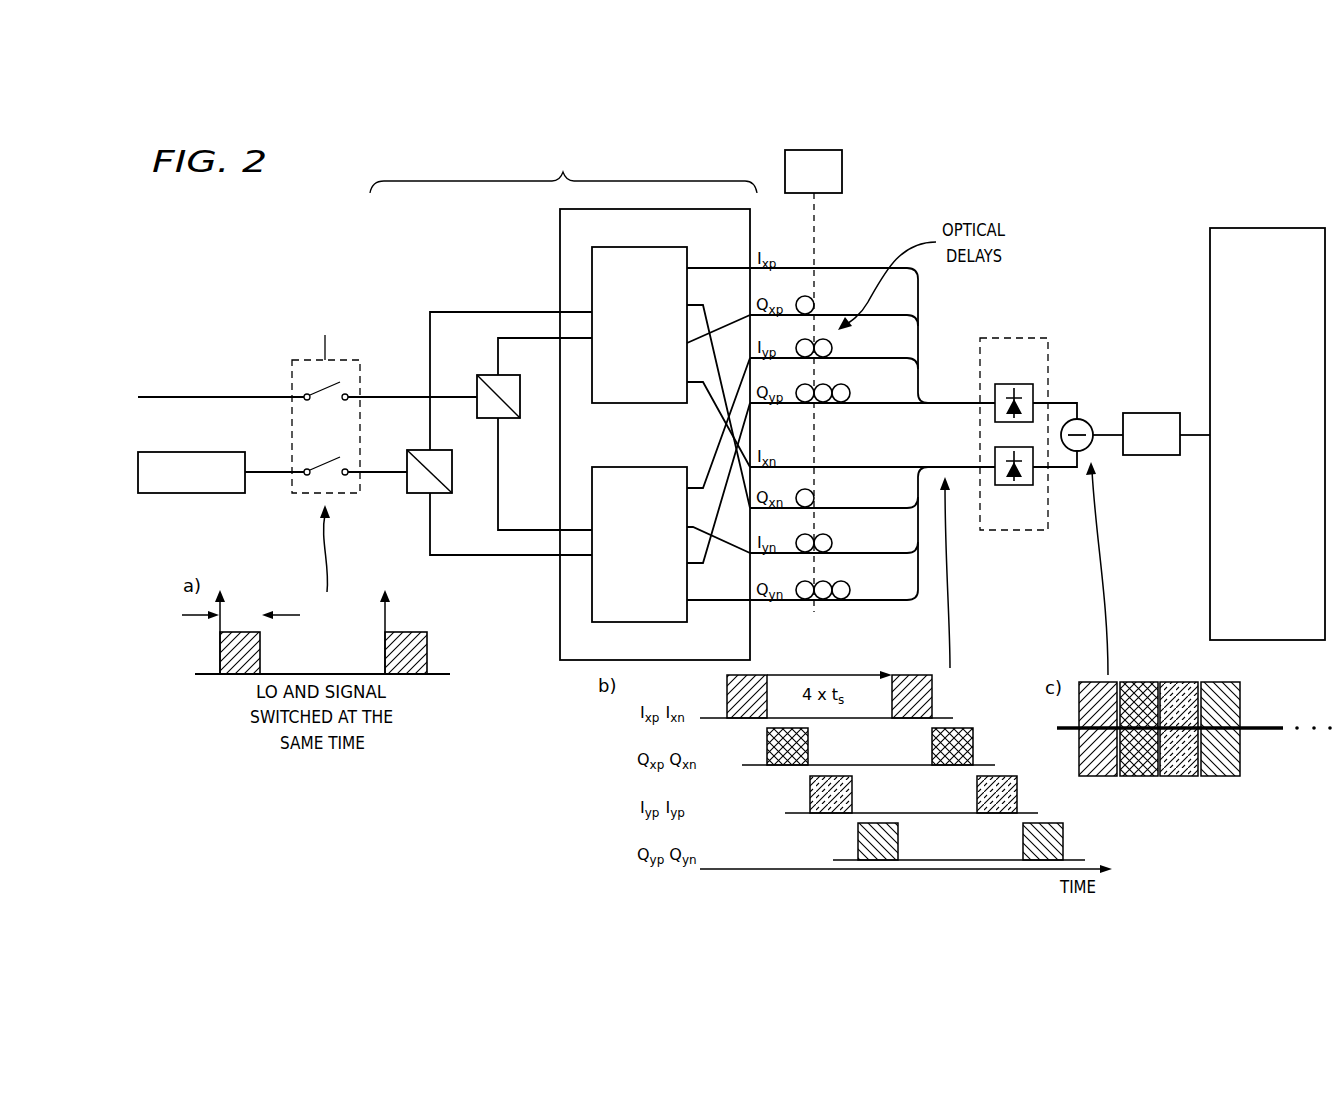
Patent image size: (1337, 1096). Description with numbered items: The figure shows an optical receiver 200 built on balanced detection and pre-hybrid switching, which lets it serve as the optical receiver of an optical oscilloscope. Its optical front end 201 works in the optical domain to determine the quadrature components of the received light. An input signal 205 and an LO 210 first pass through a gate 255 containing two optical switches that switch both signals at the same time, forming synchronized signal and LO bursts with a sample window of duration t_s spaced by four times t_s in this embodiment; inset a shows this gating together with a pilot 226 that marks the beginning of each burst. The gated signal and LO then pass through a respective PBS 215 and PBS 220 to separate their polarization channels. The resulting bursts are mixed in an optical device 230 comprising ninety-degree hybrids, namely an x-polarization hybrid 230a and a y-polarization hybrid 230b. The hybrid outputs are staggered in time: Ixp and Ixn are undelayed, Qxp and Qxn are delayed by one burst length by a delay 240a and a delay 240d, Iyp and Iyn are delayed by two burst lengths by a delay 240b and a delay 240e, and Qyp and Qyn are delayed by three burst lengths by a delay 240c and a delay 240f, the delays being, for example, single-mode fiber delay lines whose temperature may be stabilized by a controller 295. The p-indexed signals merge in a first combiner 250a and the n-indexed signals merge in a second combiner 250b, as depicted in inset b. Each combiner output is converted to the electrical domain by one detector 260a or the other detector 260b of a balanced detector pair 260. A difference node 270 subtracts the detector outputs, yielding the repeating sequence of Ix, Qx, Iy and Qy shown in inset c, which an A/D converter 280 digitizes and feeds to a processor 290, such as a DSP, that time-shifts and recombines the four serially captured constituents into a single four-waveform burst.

The optical receiver 200 is at (252, 228).
The optical front end 201 is at (563, 169).
The input signal 205 is at (188, 400).
The LO 210 is at (190, 496).
The PBS 215 is at (486, 375).
The PBS 220 is at (416, 450).
The pilot 226 is at (387, 614).
The optical device 230 is at (560, 219).
The hybrid 230a is at (624, 247).
The hybrid 230b is at (624, 622).
The delay 240a is at (857, 314).
The delay 240b is at (875, 358).
The delay 240c is at (894, 403).
The delay 240d is at (857, 507).
The delay 240e is at (875, 552).
The delay 240f is at (894, 599).
The first combiner 250a is at (950, 408).
The second combiner 250b is at (950, 464).
The gate 255 is at (352, 360).
The balanced detector pair 260 is at (998, 338).
The detector 260a is at (1014, 384).
The detector 260b is at (1014, 485).
The difference node 270 is at (1086, 419).
The A/D converter 280 is at (1140, 413).
The processor 290 is at (1272, 228).
The controller 295 is at (829, 183).